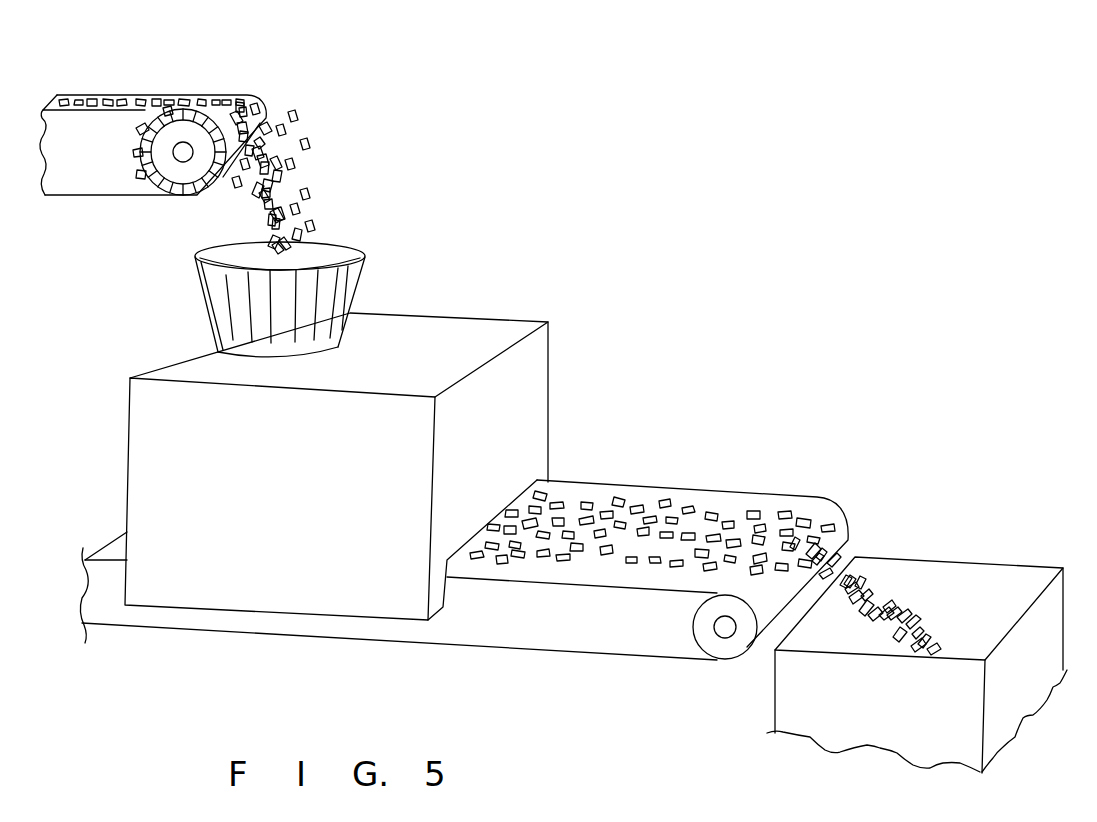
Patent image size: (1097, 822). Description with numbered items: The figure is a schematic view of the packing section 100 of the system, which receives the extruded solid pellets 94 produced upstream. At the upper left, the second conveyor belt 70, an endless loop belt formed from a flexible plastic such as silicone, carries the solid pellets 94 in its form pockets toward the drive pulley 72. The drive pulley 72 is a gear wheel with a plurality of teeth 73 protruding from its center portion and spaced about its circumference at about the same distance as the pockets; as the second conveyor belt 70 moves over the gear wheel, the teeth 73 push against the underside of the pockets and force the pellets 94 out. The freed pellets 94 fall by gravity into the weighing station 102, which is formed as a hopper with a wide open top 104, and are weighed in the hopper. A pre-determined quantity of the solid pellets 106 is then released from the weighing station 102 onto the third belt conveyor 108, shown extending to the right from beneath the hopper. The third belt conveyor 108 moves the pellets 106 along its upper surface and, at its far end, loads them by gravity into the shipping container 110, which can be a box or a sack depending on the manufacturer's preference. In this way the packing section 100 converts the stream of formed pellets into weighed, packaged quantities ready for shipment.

The packing section 100 is at (537, 131).
The second conveyor belt 70 is at (127, 95).
The teeth 73 is at (157, 104).
The drive pulley 72 is at (175, 168).
The solid pellets 94 is at (292, 152).
The open top 104 is at (333, 240).
The weighing station 102 is at (340, 292).
The third belt conveyor 108 is at (580, 493).
The pellets 106 is at (693, 510).
The shipping container 110 is at (990, 558).